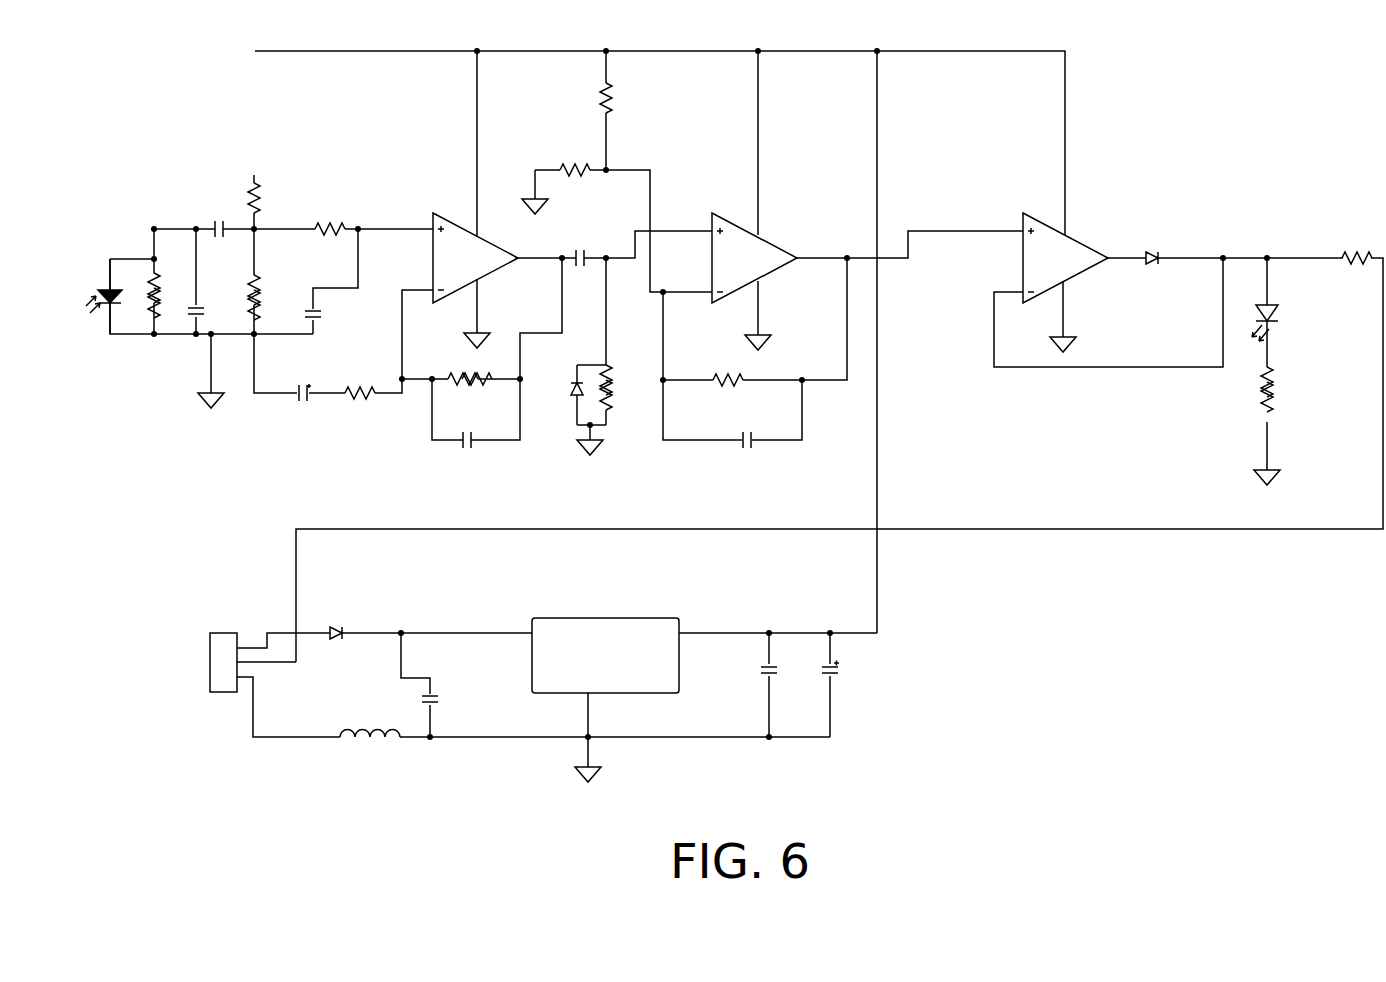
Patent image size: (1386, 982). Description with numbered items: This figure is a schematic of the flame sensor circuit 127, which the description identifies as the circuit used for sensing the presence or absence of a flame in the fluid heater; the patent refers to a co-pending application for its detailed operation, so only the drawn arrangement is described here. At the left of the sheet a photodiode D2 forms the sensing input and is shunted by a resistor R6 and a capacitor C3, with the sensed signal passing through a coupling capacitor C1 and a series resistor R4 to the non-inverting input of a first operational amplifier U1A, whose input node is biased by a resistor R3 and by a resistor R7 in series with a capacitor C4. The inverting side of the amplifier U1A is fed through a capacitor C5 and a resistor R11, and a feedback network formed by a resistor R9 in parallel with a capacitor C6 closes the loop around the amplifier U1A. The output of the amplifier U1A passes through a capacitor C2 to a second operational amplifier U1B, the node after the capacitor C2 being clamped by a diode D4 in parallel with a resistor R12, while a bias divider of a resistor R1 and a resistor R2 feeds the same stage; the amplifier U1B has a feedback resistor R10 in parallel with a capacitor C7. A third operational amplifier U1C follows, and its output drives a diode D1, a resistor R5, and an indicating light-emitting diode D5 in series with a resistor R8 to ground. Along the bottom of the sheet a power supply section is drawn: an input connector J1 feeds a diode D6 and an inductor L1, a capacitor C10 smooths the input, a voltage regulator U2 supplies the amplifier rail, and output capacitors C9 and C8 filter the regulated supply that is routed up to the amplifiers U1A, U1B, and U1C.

The flame sensor circuit 127 is at (1018, 470).
The capacitor C1 is at (228, 229).
The resistor R4 is at (332, 226).
The resistor R6 is at (163, 317).
The photodiode D2 is at (105, 310).
The capacitor C3 is at (209, 312).
The resistor R3 is at (274, 202).
The resistor R7 is at (273, 303).
The capacitor C4 is at (335, 323).
The capacitor C5 is at (312, 398).
The resistor R11 is at (366, 395).
The operational amplifier U1A is at (467, 259).
The resistor R9 is at (470, 376).
The capacitor C6 is at (477, 437).
The diode D4 is at (551, 395).
The resistor R12 is at (625, 393).
The resistor R1 is at (626, 109).
The resistor R2 is at (578, 168).
The capacitor C2 is at (594, 258).
The operational amplifier U1B is at (747, 261).
The resistor R10 is at (736, 378).
The capacitor C7 is at (757, 438).
The operational amplifier U1C is at (1057, 260).
The diode D1 is at (1174, 258).
The resistor R5 is at (1357, 258).
The LED D5 is at (1284, 320).
The resistor R8 is at (1289, 394).
The connector J1 is at (215, 663).
The diode D6 is at (359, 633).
The inductor L1 is at (369, 743).
The capacitor C10 is at (448, 715).
The voltage regulator U2 is at (606, 656).
The capacitor C9 is at (788, 687).
The capacitor C8 is at (855, 659).